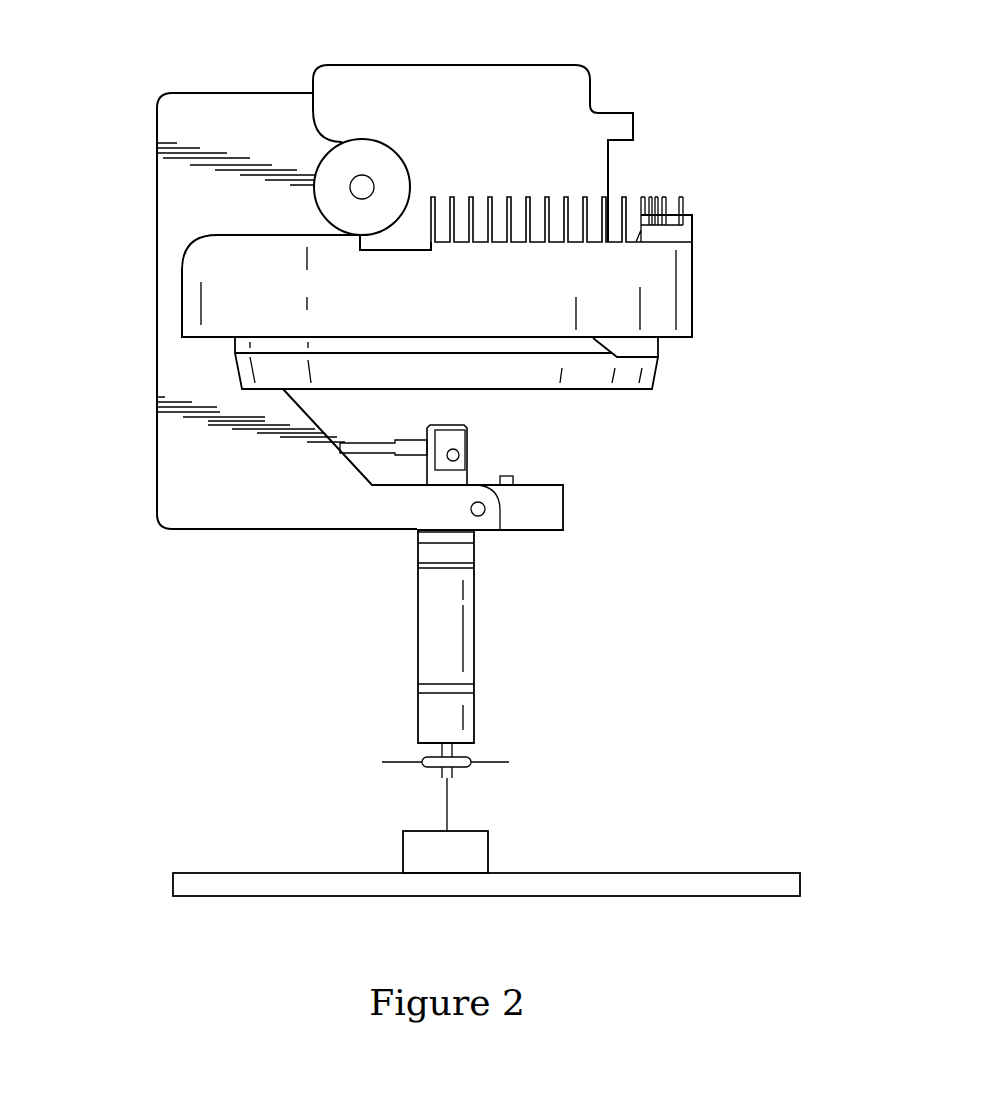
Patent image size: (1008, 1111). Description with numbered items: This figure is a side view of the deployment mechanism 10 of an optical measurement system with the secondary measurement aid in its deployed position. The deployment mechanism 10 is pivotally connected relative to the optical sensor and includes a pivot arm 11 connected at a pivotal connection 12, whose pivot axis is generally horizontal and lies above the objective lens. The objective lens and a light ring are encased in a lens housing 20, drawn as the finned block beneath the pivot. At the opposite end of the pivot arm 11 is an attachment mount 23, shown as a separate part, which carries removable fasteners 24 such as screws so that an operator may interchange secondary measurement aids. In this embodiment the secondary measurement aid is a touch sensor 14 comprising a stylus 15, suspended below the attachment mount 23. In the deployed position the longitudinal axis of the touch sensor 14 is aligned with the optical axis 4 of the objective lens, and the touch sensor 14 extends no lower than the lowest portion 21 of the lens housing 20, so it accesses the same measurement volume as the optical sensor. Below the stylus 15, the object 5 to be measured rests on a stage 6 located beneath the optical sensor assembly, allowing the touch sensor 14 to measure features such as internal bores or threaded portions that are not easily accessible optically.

The optical axis 4 is at (447, 407).
The object 5 is at (488, 848).
The stage 6 is at (800, 885).
The deployment mechanism 10 is at (157, 414).
The pivot arm 11 is at (303, 530).
The pivotal connection 12 is at (362, 187).
The touch sensor 14 is at (474, 632).
The stylus 15 is at (447, 803).
The lens housing 20 is at (692, 283).
The lowest portion 21 is at (637, 389).
The attachment mount 23 is at (565, 508).
The removable fasteners 24 is at (513, 478).